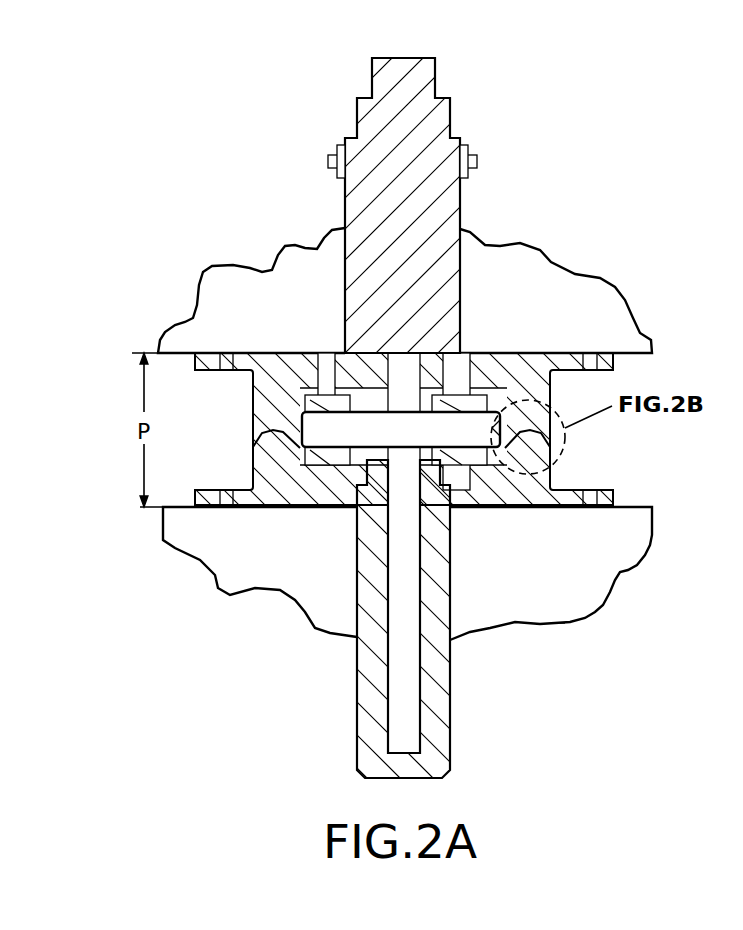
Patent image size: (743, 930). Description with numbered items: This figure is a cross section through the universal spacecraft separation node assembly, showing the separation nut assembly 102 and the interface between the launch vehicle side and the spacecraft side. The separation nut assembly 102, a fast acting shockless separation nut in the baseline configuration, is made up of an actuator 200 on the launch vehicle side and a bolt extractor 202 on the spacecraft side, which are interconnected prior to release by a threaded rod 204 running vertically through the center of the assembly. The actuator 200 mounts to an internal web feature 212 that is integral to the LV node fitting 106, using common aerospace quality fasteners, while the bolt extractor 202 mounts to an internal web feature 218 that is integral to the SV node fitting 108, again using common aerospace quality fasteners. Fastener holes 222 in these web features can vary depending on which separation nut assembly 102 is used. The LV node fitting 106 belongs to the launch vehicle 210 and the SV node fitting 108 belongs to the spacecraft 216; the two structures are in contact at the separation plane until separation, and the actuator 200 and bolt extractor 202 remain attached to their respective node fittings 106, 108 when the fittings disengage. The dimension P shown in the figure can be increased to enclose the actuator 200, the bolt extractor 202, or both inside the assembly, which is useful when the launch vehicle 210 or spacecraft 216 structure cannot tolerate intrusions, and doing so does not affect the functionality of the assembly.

The separation nut assembly 102 is at (460, 116).
The actuator 200 is at (460, 193).
The launch vehicle 210 is at (243, 284).
The LV node fitting 106 is at (565, 351).
The internal web feature 212 is at (470, 372).
The fastener holes 222 is at (490, 366).
The internal web feature 218 is at (278, 497).
The SV node fitting 108 is at (552, 508).
The spacecraft 216 is at (552, 604).
The threaded rod 204 is at (394, 606).
The bolt extractor 202 is at (450, 668).